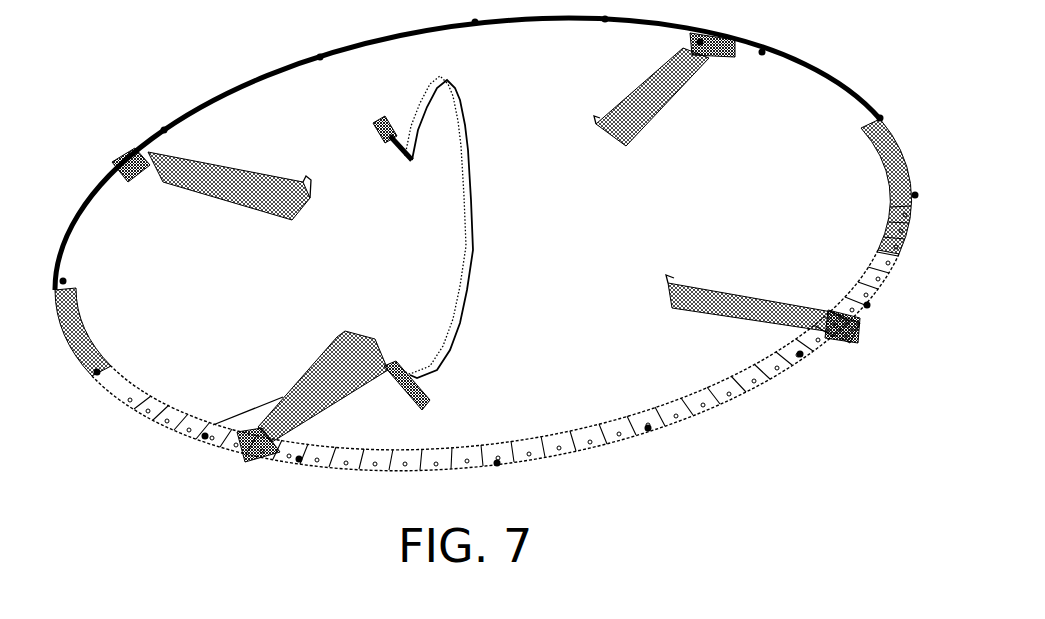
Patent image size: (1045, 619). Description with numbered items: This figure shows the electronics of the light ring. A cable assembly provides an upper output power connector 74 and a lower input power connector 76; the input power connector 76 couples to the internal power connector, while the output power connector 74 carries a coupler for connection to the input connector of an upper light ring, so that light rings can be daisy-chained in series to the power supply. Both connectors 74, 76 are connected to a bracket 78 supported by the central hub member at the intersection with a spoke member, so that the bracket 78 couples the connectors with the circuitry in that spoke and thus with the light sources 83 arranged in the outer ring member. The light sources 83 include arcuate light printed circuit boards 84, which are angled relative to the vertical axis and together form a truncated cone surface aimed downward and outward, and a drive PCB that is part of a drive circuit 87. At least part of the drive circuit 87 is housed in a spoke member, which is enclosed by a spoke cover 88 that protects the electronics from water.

The output power connector 74 is at (423, 117).
The input power connector 76 is at (383, 377).
The bracket 78 is at (328, 356).
The light sources 83 is at (838, 68).
The light printed circuit boards 84 is at (120, 403).
The drive circuit 87 is at (213, 425).
The spoke cover 88 is at (173, 182).